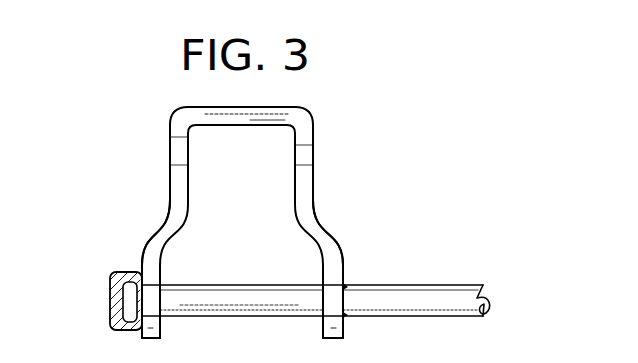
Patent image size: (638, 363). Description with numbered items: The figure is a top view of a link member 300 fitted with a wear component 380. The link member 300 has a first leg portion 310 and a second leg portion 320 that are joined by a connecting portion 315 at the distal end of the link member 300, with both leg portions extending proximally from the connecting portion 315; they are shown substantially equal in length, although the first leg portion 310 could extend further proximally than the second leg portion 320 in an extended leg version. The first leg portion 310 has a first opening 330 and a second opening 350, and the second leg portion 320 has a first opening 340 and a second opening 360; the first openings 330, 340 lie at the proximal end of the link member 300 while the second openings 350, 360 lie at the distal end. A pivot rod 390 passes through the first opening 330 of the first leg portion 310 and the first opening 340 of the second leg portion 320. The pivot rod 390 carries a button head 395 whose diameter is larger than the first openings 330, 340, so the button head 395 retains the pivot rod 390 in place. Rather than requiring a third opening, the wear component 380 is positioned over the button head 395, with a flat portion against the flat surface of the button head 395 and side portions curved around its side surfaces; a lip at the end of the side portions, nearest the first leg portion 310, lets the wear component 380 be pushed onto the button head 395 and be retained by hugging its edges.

The link member 300 is at (402, 183).
The first leg portion 310 is at (172, 205).
The connecting portion 315 is at (244, 109).
The second leg portion 320 is at (312, 211).
The first opening of first leg portion 330 is at (150, 290).
The first opening of second leg portion 340 is at (345, 292).
The second opening of first leg portion 350 is at (178, 147).
The second opening of second leg portion 360 is at (310, 147).
The wear component 380 is at (112, 283).
The pivot rod 390 is at (462, 303).
The button head 395 is at (128, 305).